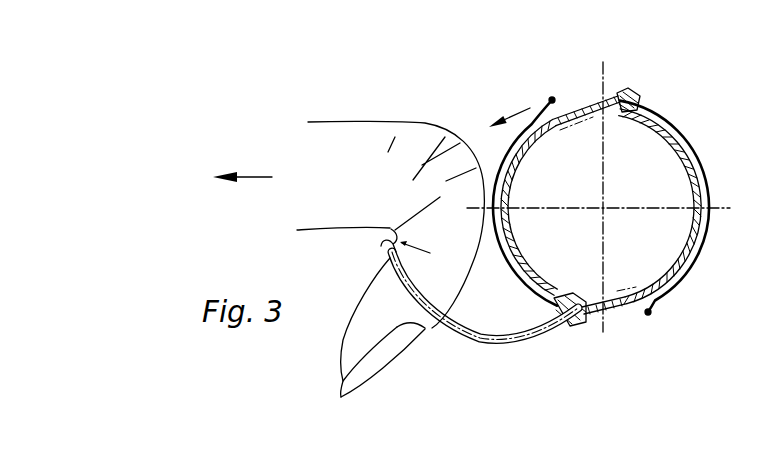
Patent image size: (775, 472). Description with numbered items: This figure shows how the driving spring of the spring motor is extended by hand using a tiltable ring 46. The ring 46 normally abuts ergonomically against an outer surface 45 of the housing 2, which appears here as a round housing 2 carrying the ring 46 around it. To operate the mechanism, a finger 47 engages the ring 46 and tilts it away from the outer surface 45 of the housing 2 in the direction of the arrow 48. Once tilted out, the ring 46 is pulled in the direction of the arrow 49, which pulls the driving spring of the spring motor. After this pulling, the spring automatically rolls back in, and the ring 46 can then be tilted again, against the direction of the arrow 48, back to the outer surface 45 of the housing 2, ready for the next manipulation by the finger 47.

The housing 2 is at (671, 108).
The outer surface 45 is at (613, 95).
The ring 46 is at (552, 98).
The finger 47 is at (365, 145).
The arrow 48 is at (519, 107).
The arrow 49 is at (258, 177).